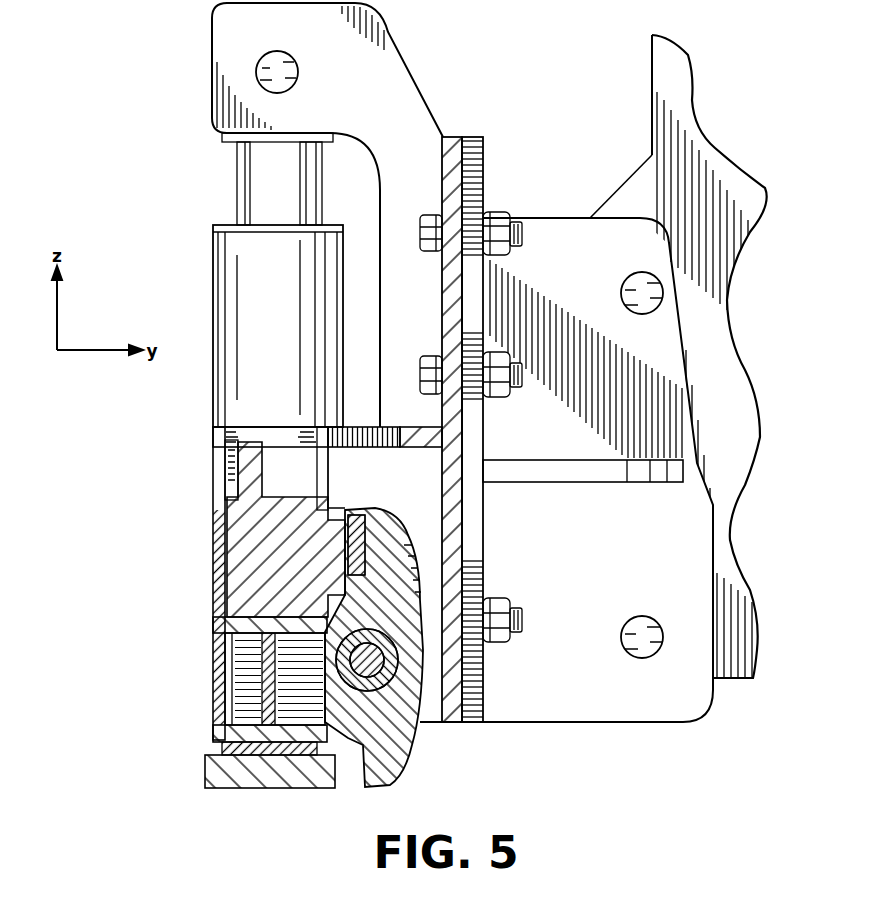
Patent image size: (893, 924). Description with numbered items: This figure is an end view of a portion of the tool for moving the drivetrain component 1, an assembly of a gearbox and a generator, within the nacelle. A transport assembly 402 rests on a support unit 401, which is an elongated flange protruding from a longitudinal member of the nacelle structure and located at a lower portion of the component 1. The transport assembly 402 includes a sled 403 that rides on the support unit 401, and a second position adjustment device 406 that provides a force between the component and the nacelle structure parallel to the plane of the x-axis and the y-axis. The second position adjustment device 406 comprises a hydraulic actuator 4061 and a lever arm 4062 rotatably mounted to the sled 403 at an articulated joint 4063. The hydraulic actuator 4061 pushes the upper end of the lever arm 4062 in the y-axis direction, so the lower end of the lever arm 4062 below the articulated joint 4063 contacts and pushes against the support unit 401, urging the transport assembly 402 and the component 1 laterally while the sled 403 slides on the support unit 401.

The drivetrain component 1 is at (666, 73).
The transport assembly 402 is at (492, 91).
The second position adjustment device 406 is at (193, 564).
The hydraulic actuator 4061 is at (240, 531).
The lever arm 4062 is at (385, 547).
The articulated joint 4063 is at (372, 655).
The sled 403 is at (268, 680).
The support unit 401 is at (214, 768).